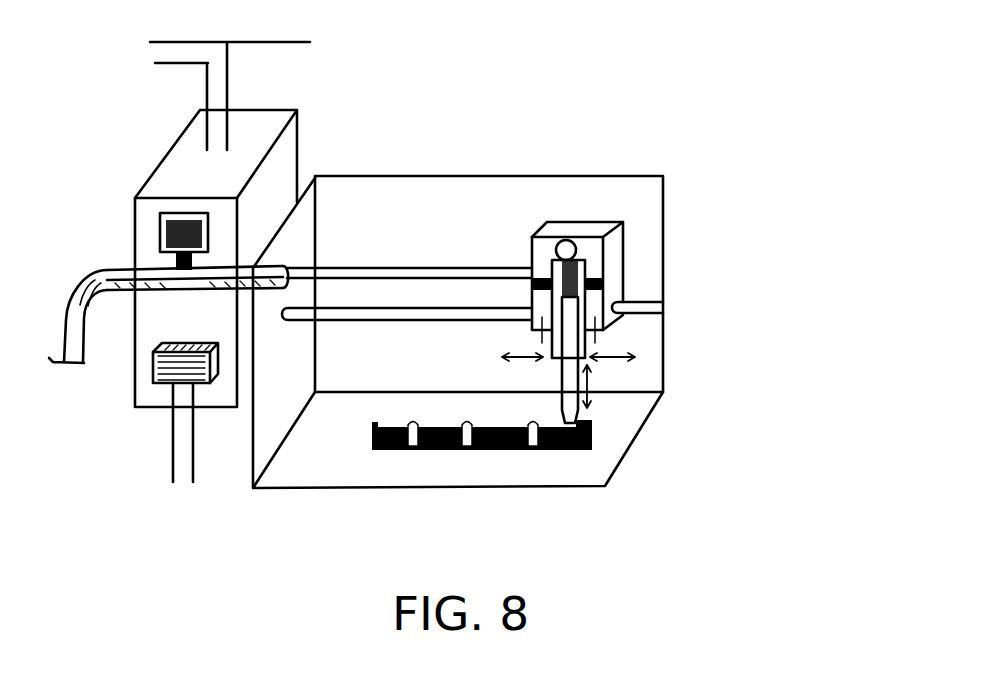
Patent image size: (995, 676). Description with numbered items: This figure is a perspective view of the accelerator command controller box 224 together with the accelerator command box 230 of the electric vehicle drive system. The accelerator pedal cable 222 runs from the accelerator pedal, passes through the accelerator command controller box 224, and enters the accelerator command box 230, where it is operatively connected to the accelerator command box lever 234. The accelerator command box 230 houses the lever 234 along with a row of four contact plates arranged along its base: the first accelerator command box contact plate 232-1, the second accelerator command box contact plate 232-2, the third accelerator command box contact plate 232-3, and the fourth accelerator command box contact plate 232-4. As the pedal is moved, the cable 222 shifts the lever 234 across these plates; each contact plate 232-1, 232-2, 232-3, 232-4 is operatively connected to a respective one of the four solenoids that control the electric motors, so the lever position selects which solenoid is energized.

The accelerator command controller box 224 is at (240, 107).
The accelerator pedal cable 222 is at (95, 340).
The accelerator command box 230 is at (437, 177).
The accelerator command box lever 234 is at (575, 222).
The accelerator command box contact plate 1 232-1 is at (593, 447).
The accelerator command box contact plate 2 232-2 is at (517, 450).
The accelerator command box contact plate 3 232-3 is at (440, 452).
The accelerator command box contact plate 4 232-4 is at (392, 452).